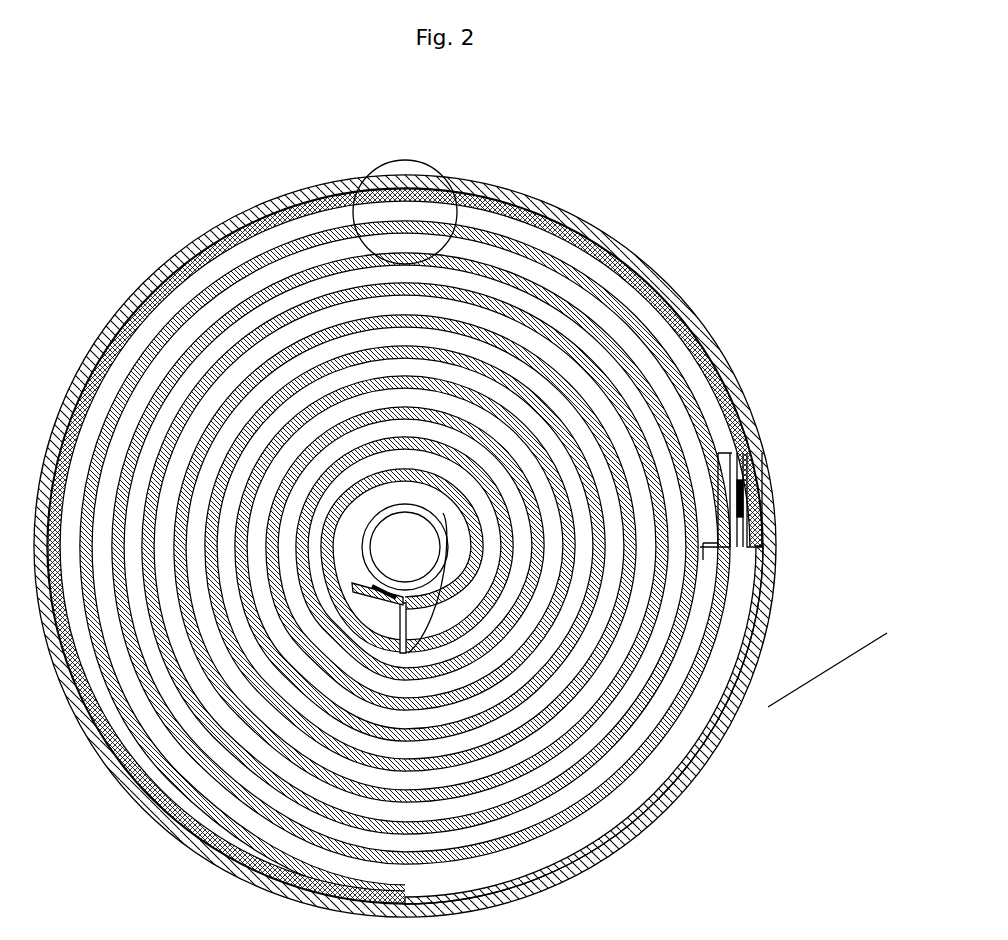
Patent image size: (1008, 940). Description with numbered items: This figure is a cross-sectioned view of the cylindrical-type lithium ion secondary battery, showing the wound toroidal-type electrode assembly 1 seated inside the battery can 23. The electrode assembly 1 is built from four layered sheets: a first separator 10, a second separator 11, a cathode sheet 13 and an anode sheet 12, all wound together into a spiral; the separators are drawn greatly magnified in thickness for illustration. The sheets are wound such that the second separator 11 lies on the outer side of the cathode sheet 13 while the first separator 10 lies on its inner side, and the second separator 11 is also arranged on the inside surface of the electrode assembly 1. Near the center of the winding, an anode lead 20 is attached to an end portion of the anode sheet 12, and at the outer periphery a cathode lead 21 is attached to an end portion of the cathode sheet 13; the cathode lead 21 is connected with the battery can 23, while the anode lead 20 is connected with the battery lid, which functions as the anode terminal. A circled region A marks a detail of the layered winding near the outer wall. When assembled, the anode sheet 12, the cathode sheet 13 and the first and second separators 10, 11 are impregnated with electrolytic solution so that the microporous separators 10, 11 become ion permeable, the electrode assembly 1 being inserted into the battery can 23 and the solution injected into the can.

The toroidal-type electrode assembly 1 is at (830, 674).
The first separator 10 is at (732, 550).
The second separator 11 is at (770, 563).
The anode sheet 12 is at (710, 550).
The cathode sheet 13 is at (750, 552).
The anode lead 20 is at (385, 582).
The cathode lead 21 is at (768, 497).
The battery can 23 is at (665, 808).
The detail region A is at (420, 160).